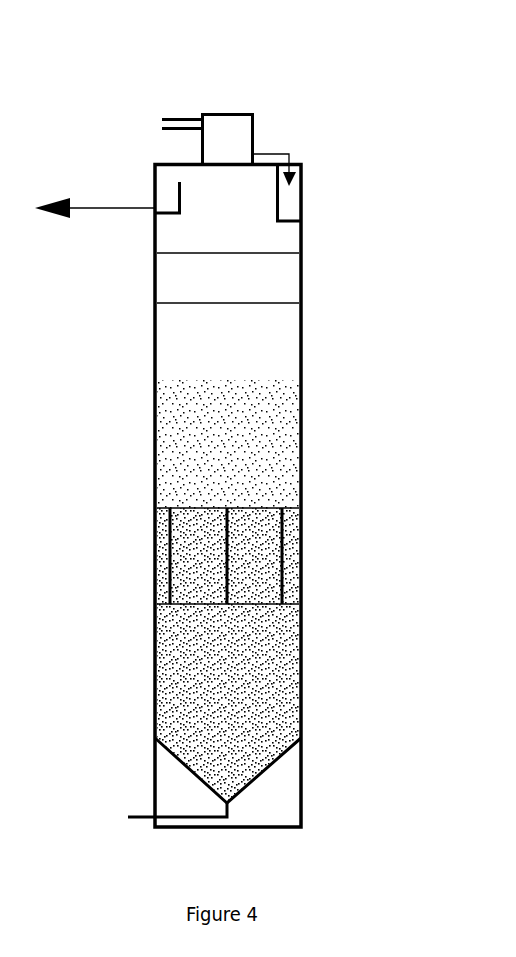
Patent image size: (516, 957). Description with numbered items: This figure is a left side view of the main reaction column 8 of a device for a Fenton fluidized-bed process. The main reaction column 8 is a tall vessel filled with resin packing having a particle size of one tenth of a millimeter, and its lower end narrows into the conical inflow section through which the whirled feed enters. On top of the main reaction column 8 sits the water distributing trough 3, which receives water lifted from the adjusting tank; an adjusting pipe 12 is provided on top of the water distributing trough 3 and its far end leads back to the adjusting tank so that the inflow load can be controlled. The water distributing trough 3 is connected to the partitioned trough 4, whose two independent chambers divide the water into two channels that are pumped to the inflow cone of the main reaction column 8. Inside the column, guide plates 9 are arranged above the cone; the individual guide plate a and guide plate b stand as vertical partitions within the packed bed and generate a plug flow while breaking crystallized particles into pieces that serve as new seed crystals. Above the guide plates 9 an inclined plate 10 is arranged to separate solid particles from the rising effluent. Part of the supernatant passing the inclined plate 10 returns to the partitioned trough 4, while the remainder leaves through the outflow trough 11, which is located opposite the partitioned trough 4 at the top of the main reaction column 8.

The water distributing trough 3 is at (235, 125).
The partitioned trough 4 is at (290, 190).
The main reaction column 8 is at (167, 397).
The guide plates 9 is at (223, 507).
The inclined plate 10 is at (283, 292).
The outflow trough 11 is at (165, 195).
The adjusting pipe 12 is at (175, 117).
The guide plate a is at (287, 547).
The guide plate b is at (157, 572).